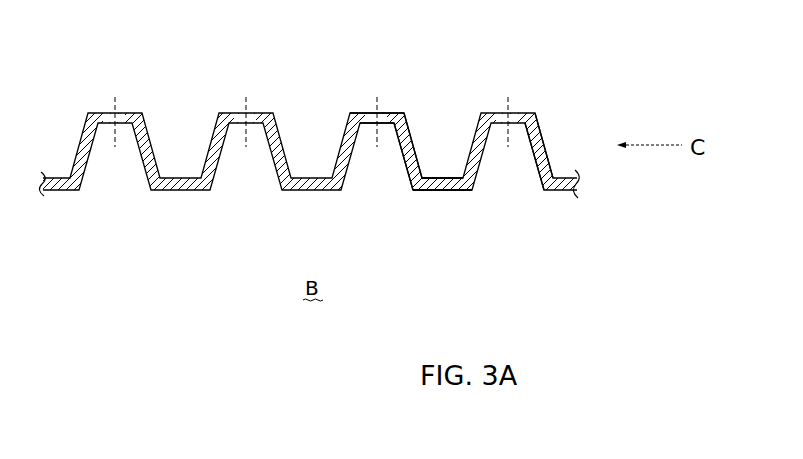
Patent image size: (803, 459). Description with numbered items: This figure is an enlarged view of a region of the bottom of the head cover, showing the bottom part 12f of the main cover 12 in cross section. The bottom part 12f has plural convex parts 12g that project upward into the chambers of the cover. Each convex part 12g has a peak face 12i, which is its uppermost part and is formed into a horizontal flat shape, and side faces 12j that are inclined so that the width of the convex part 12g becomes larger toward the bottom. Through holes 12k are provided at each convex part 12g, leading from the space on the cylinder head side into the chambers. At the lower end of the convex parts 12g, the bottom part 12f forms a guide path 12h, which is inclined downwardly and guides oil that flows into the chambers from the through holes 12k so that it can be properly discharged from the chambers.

The main cover 12 is at (583, 80).
The bottom part 12f is at (442, 224).
The convex part 12g is at (540, 137).
The guide path 12h is at (441, 178).
The peak face 12i is at (393, 112).
The side face 12j is at (409, 135).
The through hole 12k is at (372, 112).